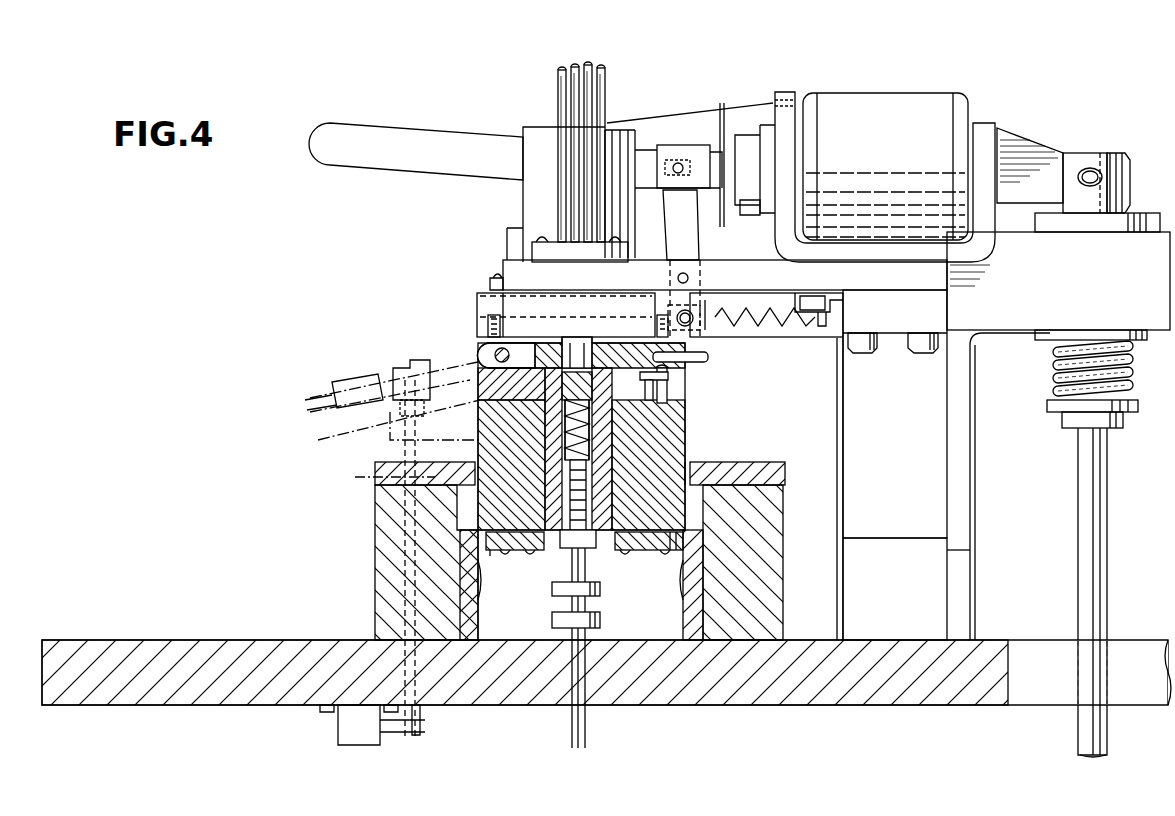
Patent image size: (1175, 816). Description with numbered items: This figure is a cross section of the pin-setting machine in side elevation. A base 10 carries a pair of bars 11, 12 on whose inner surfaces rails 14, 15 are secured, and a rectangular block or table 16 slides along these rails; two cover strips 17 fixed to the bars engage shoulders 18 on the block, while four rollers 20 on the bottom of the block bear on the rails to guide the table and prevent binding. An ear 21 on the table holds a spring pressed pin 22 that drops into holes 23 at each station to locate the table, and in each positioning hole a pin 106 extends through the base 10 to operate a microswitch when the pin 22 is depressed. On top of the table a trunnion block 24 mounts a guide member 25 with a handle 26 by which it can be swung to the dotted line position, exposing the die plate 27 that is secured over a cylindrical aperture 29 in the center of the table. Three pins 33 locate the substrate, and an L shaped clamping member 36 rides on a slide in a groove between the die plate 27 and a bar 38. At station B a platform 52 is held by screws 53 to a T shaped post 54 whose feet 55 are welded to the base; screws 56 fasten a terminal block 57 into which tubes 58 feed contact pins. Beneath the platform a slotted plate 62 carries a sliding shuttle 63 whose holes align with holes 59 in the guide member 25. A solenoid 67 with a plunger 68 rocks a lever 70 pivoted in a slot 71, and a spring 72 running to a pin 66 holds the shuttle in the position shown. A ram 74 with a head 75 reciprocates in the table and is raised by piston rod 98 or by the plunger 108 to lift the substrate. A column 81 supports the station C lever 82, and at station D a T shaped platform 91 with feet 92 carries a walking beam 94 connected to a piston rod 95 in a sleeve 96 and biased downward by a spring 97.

The base 10 is at (208, 643).
The bar 11 is at (783, 516).
The bar 12 is at (376, 518).
The rail 14 is at (690, 626).
The rail 15 is at (478, 626).
The block or table 16 is at (686, 430).
The cover strips 17 is at (378, 463).
The shoulders 18 is at (692, 482).
The rollers 20 is at (505, 560).
The ear 21 is at (399, 420).
The spring pressed pin 22 is at (400, 362).
The holes 23 is at (381, 476).
The trunnion block 24 is at (500, 371).
The guide member 25 is at (345, 384).
The handle 26 is at (698, 364).
The die plate 27 is at (553, 420).
The cylindrical aperture 29 is at (614, 408).
The pins 33 is at (518, 395).
The L shaped clamping member 36 is at (668, 385).
The bar 38 is at (655, 392).
The platform 52 is at (502, 274).
The screws 53 is at (919, 352).
The T shaped post 54 is at (905, 422).
The feet 55 is at (902, 600).
The screws 56 is at (544, 236).
The terminal block 57 is at (600, 256).
The tubes 58 is at (588, 66).
The holes 59 is at (564, 343).
The slotted plate 62 is at (510, 306).
The shuttle 63 is at (480, 316).
The pin 66 is at (820, 330).
The solenoid 67 is at (850, 100).
The plunger 68 is at (700, 148).
The lever 70 is at (690, 242).
The slot 71 is at (708, 268).
The spring 72 is at (756, 328).
The ram 74 is at (612, 490).
The head 75 is at (600, 426).
The column 81 is at (837, 404).
The lever 82 is at (374, 130).
The T shaped platform 91 is at (1072, 292).
The feet 92 is at (970, 600).
The walking beam 94 is at (1040, 142).
The piston rod 95 is at (1082, 454).
The sleeve 96 is at (1140, 212).
The spring 97 is at (1056, 366).
The piston rod 98 is at (578, 582).
The pin 106 is at (405, 565).
The plunger 108 is at (600, 616).